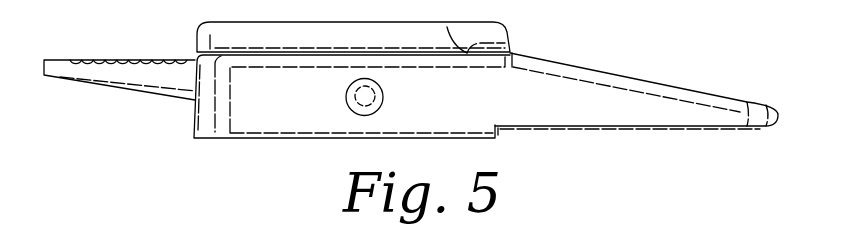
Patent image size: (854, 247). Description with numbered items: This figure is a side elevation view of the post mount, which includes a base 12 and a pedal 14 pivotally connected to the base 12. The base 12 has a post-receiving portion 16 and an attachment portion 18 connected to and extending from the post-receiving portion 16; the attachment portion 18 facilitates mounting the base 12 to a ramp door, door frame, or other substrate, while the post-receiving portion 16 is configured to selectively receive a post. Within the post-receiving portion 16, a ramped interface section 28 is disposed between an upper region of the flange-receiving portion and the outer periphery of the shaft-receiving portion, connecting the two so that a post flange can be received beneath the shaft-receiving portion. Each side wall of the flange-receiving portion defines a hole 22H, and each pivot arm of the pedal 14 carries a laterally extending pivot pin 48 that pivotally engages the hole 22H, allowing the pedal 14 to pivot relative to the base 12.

The base 12 is at (506, 106).
The pedal 14 is at (57, 70).
The post-receiving portion 16 is at (293, 107).
The attachment portion 18 is at (599, 113).
The ramped interface section 28 is at (208, 43).
The pivot pin 48 is at (375, 93).
The hole 22H is at (380, 108).